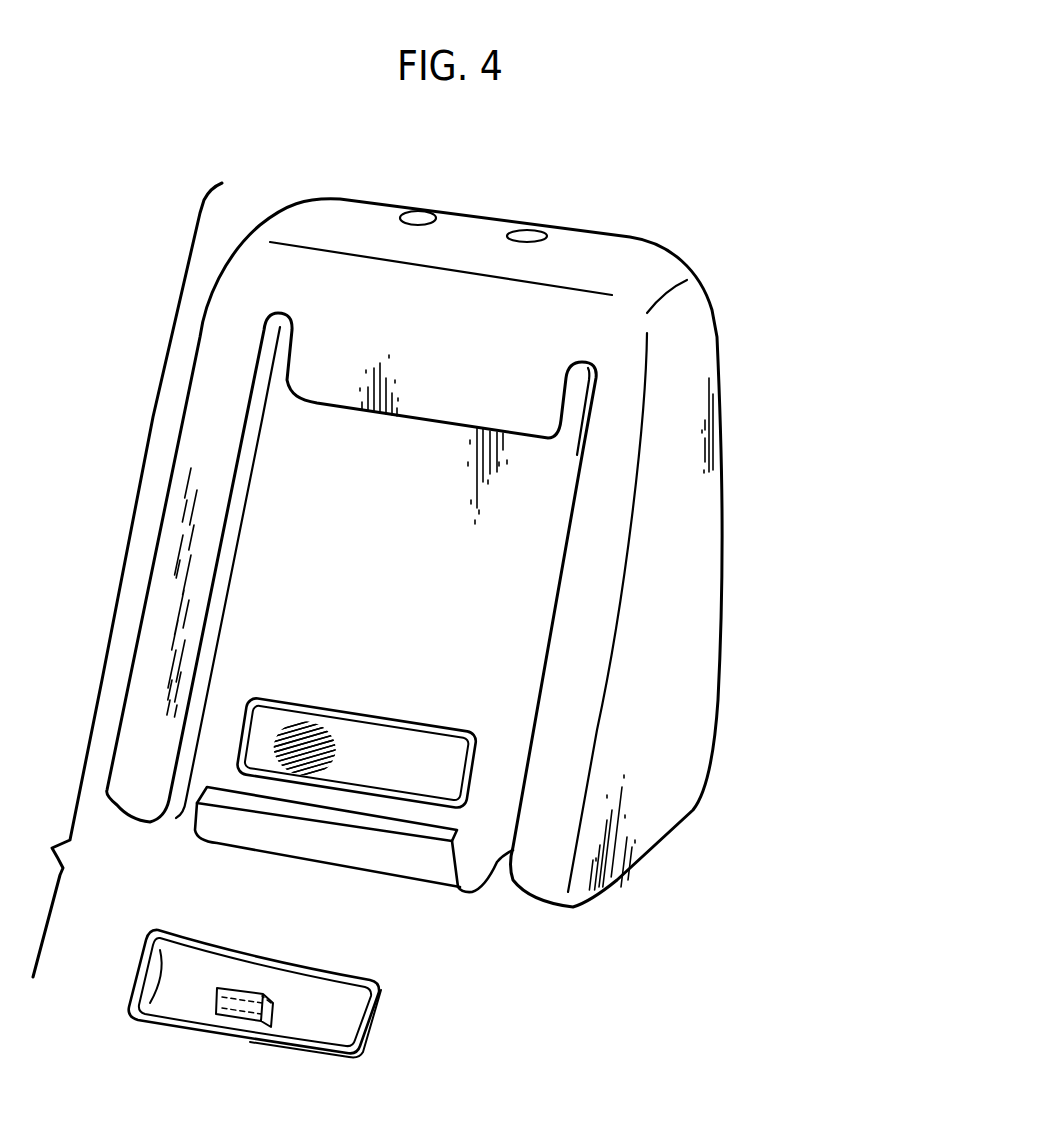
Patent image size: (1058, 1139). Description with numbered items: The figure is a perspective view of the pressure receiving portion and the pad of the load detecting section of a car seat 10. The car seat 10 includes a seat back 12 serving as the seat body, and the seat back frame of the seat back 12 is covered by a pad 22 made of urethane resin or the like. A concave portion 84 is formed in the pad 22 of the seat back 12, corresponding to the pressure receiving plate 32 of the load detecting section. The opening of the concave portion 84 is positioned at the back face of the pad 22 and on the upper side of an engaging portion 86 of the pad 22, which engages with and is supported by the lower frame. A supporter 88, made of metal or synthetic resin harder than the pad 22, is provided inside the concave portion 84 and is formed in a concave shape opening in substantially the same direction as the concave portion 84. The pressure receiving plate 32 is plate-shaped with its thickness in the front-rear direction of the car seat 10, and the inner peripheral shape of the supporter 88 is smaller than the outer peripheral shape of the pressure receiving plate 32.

The seat back 12 is at (480, 580).
The car seat 10 is at (421, 580).
The pad 22 is at (700, 593).
The concave portion 84 is at (356, 730).
The supporter 88 is at (305, 748).
The engaging portion 86 is at (360, 850).
The pressure receiving plate 32 is at (377, 1007).